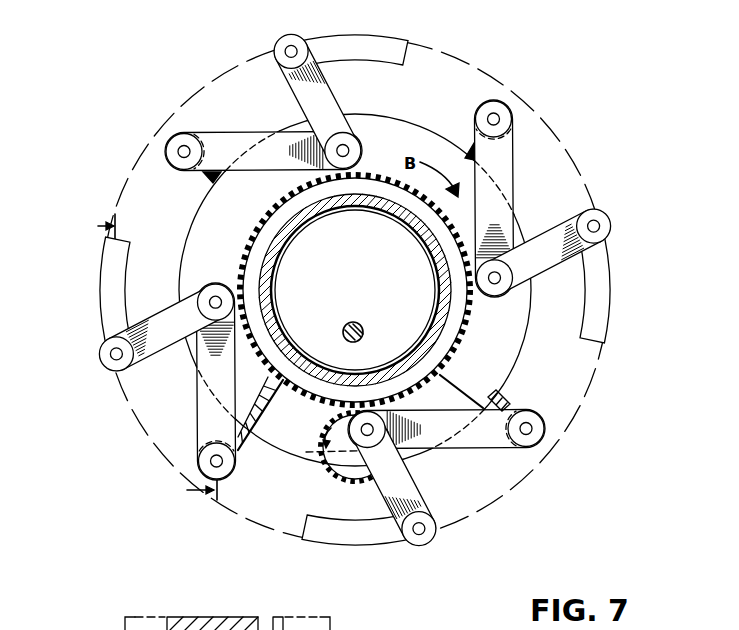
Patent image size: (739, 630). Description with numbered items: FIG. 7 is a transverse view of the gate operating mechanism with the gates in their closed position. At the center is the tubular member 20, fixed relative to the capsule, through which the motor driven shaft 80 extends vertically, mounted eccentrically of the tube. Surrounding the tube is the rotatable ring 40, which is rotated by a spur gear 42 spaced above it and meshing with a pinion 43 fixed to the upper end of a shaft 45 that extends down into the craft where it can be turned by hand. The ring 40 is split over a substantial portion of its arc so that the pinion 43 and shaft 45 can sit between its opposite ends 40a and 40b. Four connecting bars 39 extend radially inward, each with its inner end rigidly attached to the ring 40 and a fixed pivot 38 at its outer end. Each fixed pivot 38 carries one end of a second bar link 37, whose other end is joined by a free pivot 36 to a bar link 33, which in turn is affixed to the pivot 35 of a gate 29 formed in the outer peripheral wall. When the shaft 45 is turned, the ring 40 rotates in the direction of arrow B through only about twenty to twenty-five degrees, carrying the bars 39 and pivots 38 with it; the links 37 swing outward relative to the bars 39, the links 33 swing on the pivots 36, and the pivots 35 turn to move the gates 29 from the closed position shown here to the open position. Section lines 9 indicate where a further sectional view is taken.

The section line 9- 9 is at (148, 366).
The tubular member 20 is at (397, 210).
The gate 29 is at (362, 38).
The bar link 33 is at (326, 98).
The pivot 35 is at (292, 45).
The free pivot 36 is at (350, 150).
The second bar link 37 is at (228, 139).
The fixed pivot 38 is at (182, 147).
The connecting bar 39 is at (206, 176).
The rotatable ring 40 is at (248, 206).
The end of ring 40a is at (240, 405).
The end of ring 40b is at (456, 383).
The spur gear 42 is at (421, 376).
The pinion 43 is at (333, 471).
The shaft 45 is at (341, 453).
The motor driven shaft 80 is at (360, 331).